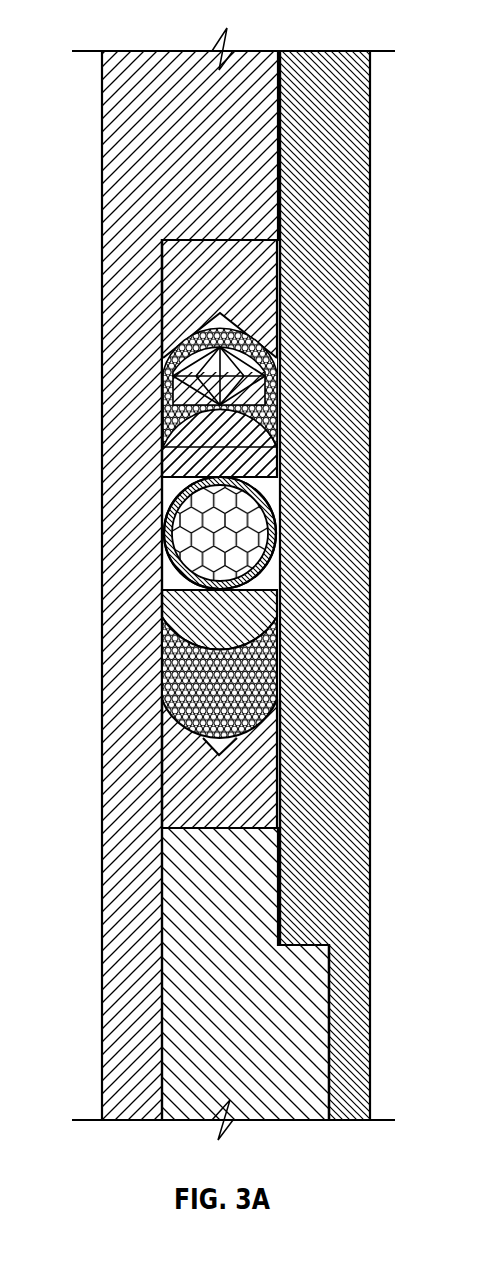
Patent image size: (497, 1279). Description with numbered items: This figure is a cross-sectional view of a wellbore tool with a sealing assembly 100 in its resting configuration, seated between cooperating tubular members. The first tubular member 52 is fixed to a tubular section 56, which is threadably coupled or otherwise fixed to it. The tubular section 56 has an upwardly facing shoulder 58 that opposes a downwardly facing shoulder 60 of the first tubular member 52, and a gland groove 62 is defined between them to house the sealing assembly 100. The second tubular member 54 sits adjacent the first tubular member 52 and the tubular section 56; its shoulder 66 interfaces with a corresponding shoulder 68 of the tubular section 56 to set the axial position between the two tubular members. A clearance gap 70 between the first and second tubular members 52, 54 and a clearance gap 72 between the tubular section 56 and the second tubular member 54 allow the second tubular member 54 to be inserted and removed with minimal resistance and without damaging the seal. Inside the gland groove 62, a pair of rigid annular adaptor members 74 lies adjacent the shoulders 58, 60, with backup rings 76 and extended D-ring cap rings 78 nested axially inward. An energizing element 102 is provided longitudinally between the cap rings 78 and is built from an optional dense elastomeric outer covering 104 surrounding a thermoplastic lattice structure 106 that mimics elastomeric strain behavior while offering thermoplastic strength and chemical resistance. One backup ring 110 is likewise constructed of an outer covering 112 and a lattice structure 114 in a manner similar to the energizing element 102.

The first tubular member 52 is at (102, 140).
The second tubular member 54 is at (370, 183).
The tubular section 56 is at (172, 1035).
The upwardly facing shoulder 58 is at (168, 831).
The downwardly facing shoulder 60 is at (166, 243).
The gland groove 62 is at (278, 757).
The shoulder 66 is at (316, 944).
The shoulder 68 is at (333, 990).
The clearance gap 70 is at (278, 153).
The clearance gap 72 is at (282, 907).
The annular adaptor members 74 is at (168, 290).
The backup rings 76 is at (163, 668).
The cap rings 78 is at (163, 457).
The sealing assembly 100 is at (278, 298).
The energizing element 102 is at (231, 505).
The outer covering 104 is at (170, 487).
The lattice structure 106 is at (168, 548).
The backup ring 110 is at (163, 403).
The outer covering 112 is at (280, 383).
The lattice structure 114 is at (275, 407).